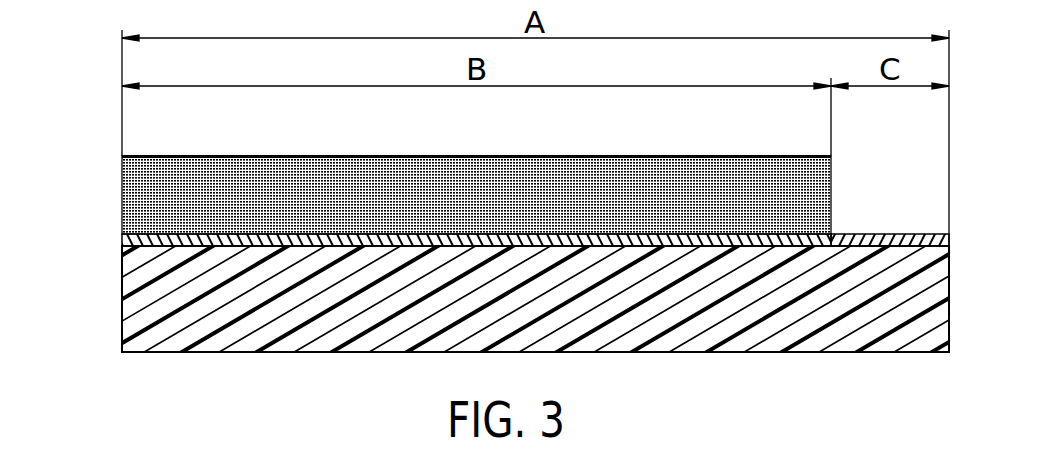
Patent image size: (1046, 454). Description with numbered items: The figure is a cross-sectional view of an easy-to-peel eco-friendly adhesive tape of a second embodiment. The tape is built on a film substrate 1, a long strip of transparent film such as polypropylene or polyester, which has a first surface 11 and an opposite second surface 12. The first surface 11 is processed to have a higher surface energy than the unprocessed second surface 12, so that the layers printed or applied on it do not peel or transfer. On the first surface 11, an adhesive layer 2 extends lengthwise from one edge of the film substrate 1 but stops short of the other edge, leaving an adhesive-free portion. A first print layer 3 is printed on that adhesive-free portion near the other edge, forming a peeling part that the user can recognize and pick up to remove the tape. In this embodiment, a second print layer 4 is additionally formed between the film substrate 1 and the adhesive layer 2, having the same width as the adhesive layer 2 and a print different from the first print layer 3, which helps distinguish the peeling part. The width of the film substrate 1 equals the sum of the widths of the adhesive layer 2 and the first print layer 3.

The film substrate 1 is at (122, 289).
The adhesive layer 2 is at (122, 193).
The first print layer 3 is at (881, 234).
The second print layer 4 is at (543, 234).
The first surface 11 is at (180, 237).
The second surface 12 is at (163, 352).